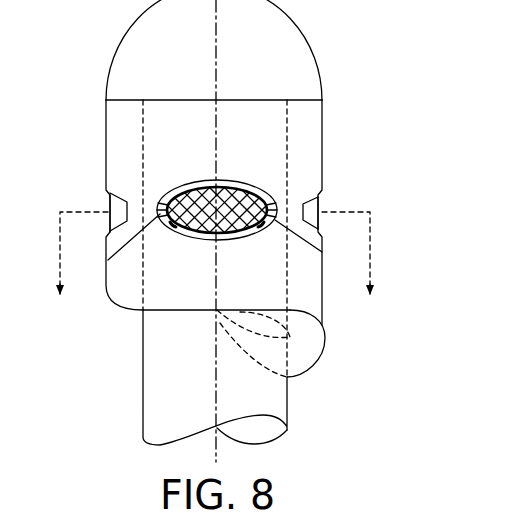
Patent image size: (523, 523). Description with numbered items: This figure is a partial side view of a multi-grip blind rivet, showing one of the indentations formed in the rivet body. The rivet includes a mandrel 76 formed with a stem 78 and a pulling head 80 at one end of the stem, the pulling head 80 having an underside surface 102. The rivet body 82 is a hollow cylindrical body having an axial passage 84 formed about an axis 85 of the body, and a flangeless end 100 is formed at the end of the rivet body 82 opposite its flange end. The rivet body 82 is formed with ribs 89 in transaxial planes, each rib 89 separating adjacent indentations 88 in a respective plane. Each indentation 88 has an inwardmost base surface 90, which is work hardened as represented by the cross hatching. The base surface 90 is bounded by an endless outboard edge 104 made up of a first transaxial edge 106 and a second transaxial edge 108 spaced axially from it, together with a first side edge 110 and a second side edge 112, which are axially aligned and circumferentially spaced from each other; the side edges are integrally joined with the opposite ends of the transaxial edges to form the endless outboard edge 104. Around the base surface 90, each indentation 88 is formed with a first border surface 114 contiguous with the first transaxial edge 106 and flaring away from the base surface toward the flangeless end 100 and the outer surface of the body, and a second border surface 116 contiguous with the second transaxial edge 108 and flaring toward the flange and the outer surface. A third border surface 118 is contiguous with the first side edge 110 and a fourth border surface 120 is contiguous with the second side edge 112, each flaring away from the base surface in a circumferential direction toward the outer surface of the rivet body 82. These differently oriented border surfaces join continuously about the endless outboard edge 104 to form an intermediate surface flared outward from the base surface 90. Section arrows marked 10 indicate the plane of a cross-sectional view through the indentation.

The section line 10 is at (214, 271).
The mandrel 76 is at (141, 407).
The stem 78 is at (287, 407).
The pulling head 80 is at (300, 50).
The rivet body 82 is at (319, 309).
The axial passage 84 is at (287, 132).
The axis 85 is at (207, 38).
The indentation 88 is at (163, 153).
The rib 89 is at (140, 205).
The base surface 90 is at (316, 200).
The flangeless end 100 is at (128, 98).
The underside surface 102 is at (322, 110).
The endless outboard edge 104 is at (265, 181).
The first transaxial edge 106 is at (197, 183).
The second transaxial edge 108 is at (197, 238).
The first side edge 110 is at (108, 258).
The second side edge 112 is at (322, 250).
The first border surface 114 is at (225, 182).
The second border surface 116 is at (247, 238).
The third border surface 118 is at (318, 222).
The fourth border surface 120 is at (110, 202).